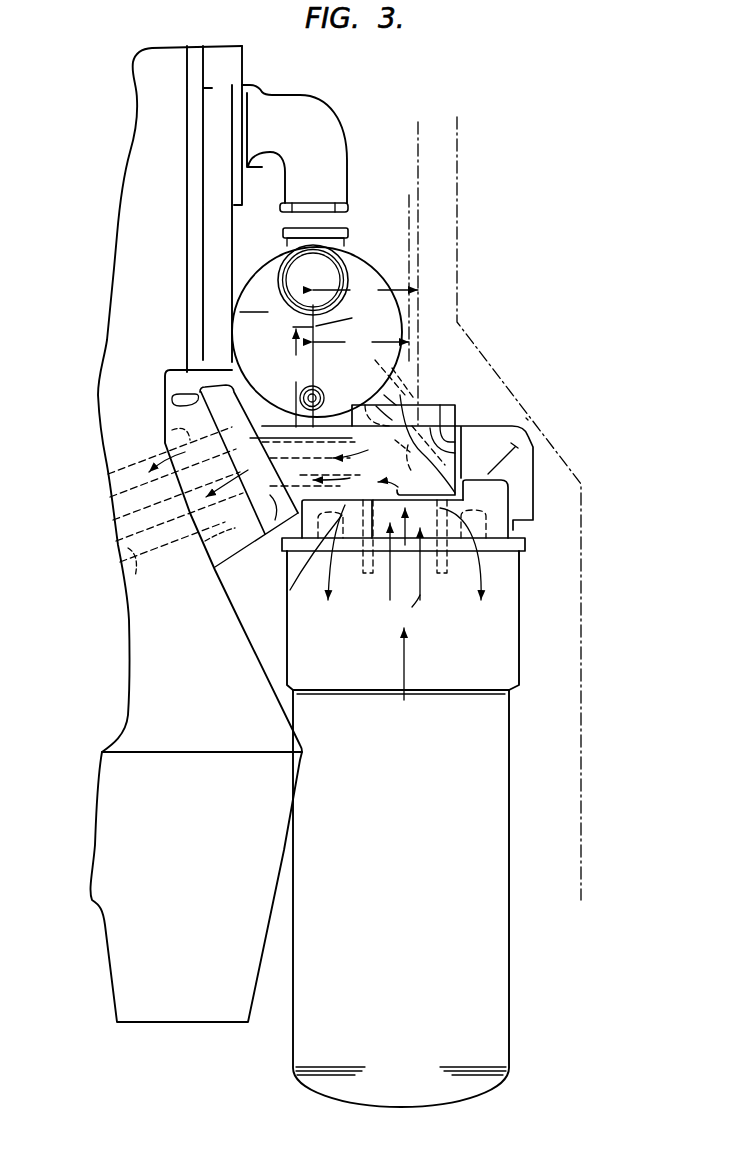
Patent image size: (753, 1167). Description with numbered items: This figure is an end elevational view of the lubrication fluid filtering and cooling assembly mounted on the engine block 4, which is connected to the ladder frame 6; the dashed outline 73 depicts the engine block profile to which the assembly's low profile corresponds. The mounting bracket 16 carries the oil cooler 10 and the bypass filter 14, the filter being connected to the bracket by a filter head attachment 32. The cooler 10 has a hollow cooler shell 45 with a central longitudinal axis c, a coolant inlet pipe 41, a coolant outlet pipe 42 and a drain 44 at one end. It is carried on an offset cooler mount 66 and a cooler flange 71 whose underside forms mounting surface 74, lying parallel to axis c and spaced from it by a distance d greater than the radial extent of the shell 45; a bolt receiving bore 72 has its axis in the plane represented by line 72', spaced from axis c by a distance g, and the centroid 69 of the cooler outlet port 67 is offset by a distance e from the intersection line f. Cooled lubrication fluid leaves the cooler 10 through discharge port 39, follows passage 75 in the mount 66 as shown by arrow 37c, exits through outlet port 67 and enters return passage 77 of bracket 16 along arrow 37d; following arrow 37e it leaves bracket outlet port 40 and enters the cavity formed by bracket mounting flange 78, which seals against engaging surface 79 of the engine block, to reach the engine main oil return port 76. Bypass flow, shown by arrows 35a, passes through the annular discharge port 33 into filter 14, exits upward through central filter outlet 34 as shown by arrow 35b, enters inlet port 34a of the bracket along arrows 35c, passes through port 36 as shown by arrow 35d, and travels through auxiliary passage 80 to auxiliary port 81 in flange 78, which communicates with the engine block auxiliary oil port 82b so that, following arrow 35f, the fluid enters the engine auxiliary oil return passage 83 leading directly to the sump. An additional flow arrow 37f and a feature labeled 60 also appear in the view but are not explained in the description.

The engine block 4 is at (125, 318).
The ladder frame 6 is at (97, 906).
The oil cooler 10 is at (398, 268).
The bypass filter 14 is at (490, 1027).
The bracket 16 is at (527, 418).
The filter head attachment 32 is at (514, 526).
The annular discharge port 33 is at (290, 586).
The central filter outlet 34 is at (331, 597).
The inlet port 34a is at (413, 608).
The arrows 35a is at (500, 583).
The arrow 35b is at (404, 700).
The arrows 35c is at (392, 592).
The arrow 35d is at (424, 588).
The arrow 35f is at (218, 480).
The port 36 is at (360, 498).
The arrow 37c is at (376, 406).
The arrow 37d is at (352, 460).
The arrow 37e is at (275, 447).
The oil passage 37f is at (140, 470).
The discharge port 39 is at (384, 395).
The bracket outlet port 40 is at (288, 430).
The inlet pipe 41 is at (300, 295).
The outlet pipe 42 is at (345, 232).
The drain 44 is at (303, 393).
The cooler shell 45 is at (360, 262).
The housing portion 60 is at (254, 300).
The cooler mount 66 is at (415, 385).
The cooler outlet port 67 is at (461, 452).
The centroid 69 is at (460, 488).
The cooler flange 71 is at (446, 405).
The bolt receiving bore 72 is at (446, 421).
The line 72' is at (430, 258).
The dashed outline 73 is at (583, 598).
The mounting surface 74 is at (464, 425).
The passage 75 is at (415, 352).
The main engine lubrication fluid inlet port 76 is at (172, 430).
The lubrication fluid return passage 77 is at (400, 483).
The bracket mounting flange 78 is at (222, 386).
The engaging surface 79 is at (175, 401).
The auxiliary passage 80 is at (278, 508).
The auxiliary port 81 is at (249, 462).
The engine block auxiliary oil port 82b is at (205, 541).
The engine auxiliary oil return passage 83 is at (127, 582).